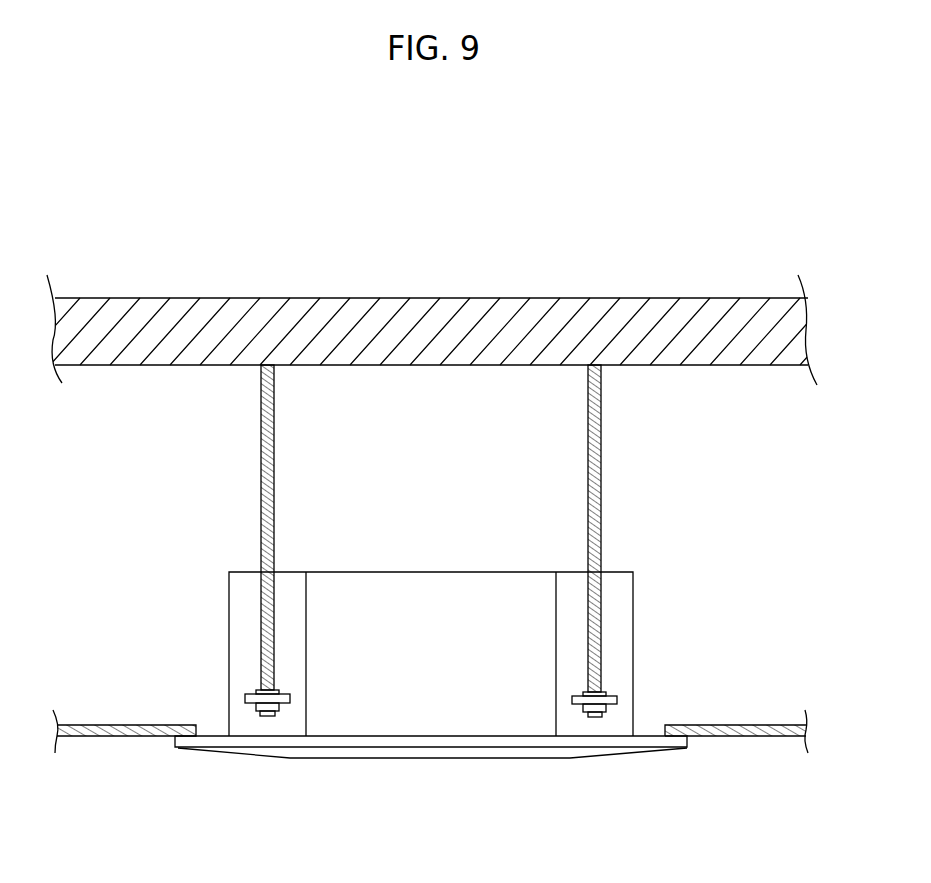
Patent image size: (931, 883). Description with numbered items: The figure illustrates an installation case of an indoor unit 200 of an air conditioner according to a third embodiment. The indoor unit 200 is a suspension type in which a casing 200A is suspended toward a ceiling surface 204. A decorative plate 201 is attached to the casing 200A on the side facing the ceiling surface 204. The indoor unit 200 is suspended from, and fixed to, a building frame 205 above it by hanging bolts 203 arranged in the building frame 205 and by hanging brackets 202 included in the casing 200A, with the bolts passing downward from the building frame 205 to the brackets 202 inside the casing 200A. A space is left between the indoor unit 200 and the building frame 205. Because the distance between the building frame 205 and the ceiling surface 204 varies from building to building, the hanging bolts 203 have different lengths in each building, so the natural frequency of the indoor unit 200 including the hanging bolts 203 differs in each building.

The indoor unit 200 is at (633, 625).
The casing 200A is at (617, 613).
The decorative plate 201 is at (432, 753).
The hanging brackets 202 is at (607, 692).
The hanging bolts 203 is at (598, 488).
The ceiling surface 204 is at (730, 725).
The building frame 205 is at (213, 363).